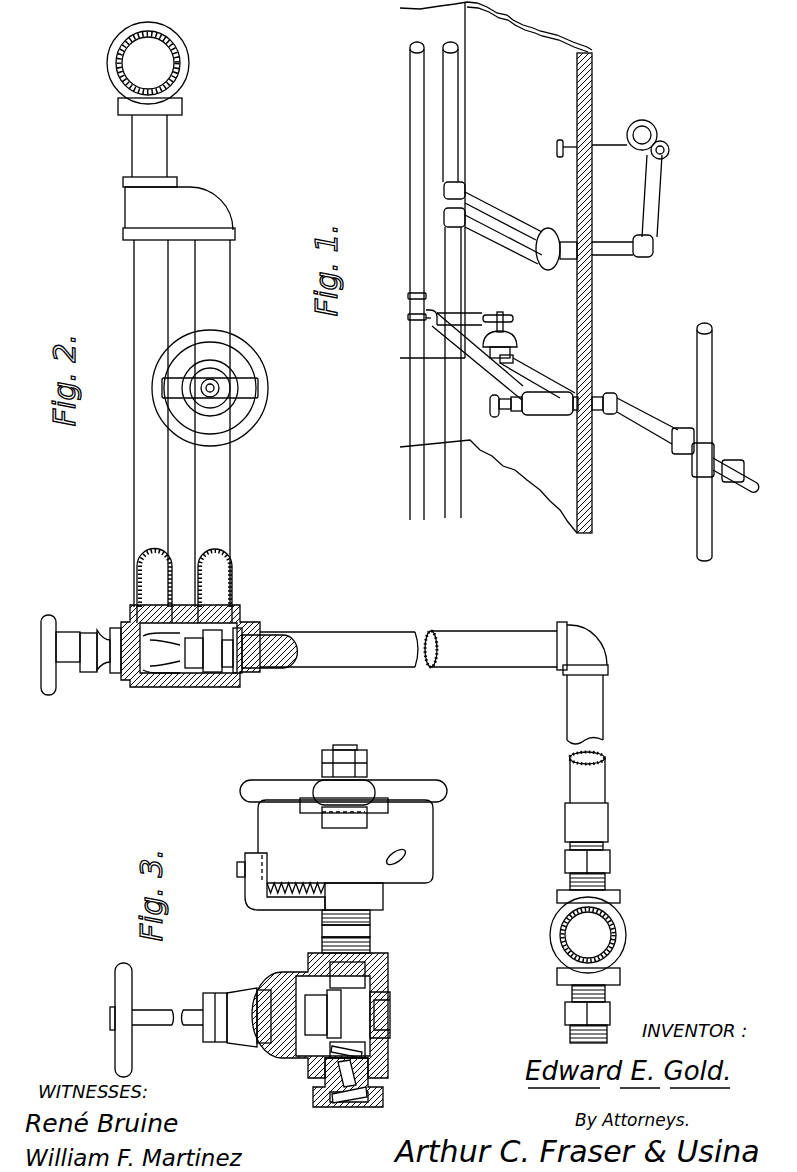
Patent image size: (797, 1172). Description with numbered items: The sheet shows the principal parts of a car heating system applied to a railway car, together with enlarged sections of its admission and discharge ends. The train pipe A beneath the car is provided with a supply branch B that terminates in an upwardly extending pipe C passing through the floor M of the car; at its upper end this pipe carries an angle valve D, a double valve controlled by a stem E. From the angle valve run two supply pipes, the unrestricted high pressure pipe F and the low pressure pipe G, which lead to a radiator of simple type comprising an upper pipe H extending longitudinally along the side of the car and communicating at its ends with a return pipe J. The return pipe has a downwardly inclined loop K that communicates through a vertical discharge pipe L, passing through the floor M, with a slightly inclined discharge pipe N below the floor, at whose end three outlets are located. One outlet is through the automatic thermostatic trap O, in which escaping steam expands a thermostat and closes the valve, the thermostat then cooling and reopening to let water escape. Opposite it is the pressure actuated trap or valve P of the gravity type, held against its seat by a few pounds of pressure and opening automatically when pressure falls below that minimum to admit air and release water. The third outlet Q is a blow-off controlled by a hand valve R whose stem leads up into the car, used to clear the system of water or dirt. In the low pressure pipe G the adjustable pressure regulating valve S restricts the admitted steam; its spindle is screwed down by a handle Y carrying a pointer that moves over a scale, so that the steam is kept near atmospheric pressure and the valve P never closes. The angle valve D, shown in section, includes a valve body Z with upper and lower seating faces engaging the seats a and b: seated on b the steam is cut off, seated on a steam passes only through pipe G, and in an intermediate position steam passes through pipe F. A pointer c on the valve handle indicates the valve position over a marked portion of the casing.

In FIG. 1, the train pipe A is at (699, 468).
In FIG. 3, the train pipe A is at (614, 932).
In FIG. 1, the supply branch B is at (642, 430).
In FIG. 3, the supply branch B is at (597, 784).
In FIG. 1, the upwardly extending pipe C is at (612, 392).
In FIG. 2, the upwardly extending pipe C is at (295, 632).
In FIG. 1, the angle valve D is at (538, 416).
In FIG. 2, the angle valve D is at (155, 686).
In FIG. 1, the stem E is at (496, 418).
In FIG. 2, the stem E is at (40, 648).
In FIG. 1, the supply pipe F is at (420, 360).
In FIG. 2, the supply pipe F is at (137, 318).
In FIG. 1, the supply pipe G is at (483, 316).
In FIG. 2, the supply pipe G is at (222, 278).
In FIG. 1, the upper pipe H is at (418, 255).
In FIG. 2, the upper pipe H is at (122, 79).
In FIG. 1, the return pipe J is at (450, 242).
In FIG. 1, the downwardly inclined loop K is at (511, 215).
In FIG. 1, the vertical discharge pipe L is at (622, 257).
In FIG. 1, the floor M is at (496, 267).
In FIG. 1, the inclined discharge pipe N is at (642, 208).
In FIG. 1, the automatic trap O is at (613, 128).
In FIG. 3, the automatic trap O is at (342, 849).
In FIG. 1, the pressure actuated trap or valve P is at (669, 152).
In FIG. 3, the pressure actuated trap or valve P is at (382, 1098).
In FIG. 3, the blow-off outlet Q is at (392, 1008).
In FIG. 3, the hand valve R is at (275, 986).
In FIG. 1, the pressure regulating valve S is at (516, 340).
In FIG. 2, the pressure regulating valve S is at (256, 426).
In FIG. 2, the handle Y is at (258, 388).
In FIG. 2, the valve body Z is at (214, 672).
In FIG. 2, the upper seat a is at (196, 678).
In FIG. 2, the lower seat b is at (242, 684).
In FIG. 2, the pointer c is at (82, 632).